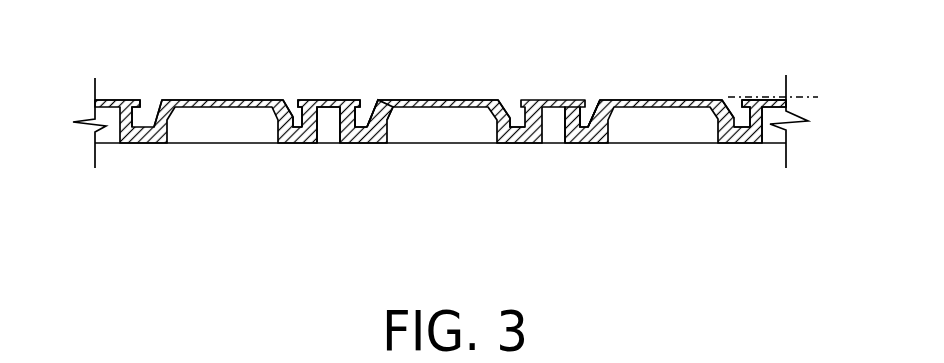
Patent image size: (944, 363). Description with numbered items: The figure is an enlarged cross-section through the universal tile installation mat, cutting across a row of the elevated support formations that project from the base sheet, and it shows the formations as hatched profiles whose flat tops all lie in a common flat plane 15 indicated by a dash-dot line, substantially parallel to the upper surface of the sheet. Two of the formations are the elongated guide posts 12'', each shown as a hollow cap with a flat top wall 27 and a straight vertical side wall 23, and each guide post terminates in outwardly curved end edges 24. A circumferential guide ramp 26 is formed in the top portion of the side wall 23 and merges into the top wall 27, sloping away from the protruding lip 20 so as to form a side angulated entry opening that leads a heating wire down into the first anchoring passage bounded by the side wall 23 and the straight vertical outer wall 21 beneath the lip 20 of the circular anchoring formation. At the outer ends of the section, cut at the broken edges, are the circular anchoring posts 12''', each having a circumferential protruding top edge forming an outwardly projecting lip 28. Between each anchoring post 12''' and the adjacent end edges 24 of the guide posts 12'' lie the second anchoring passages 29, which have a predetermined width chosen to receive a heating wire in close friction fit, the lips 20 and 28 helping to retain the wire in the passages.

The guide post 12'' is at (444, 64).
The circular anchoring post 12''' is at (440, 83).
The common flat plane 15 is at (741, 98).
The lip 20 is at (366, 99).
The vertical outer wall 21 is at (583, 143).
The straight vertical side wall 23 is at (371, 132).
The outwardly curved end edges 24 is at (297, 102).
The guide ramp 26 is at (372, 121).
The flat top wall 27 is at (444, 92).
The outwardly projecting lip 28 is at (590, 122).
The second anchoring passages 29 is at (606, 94).